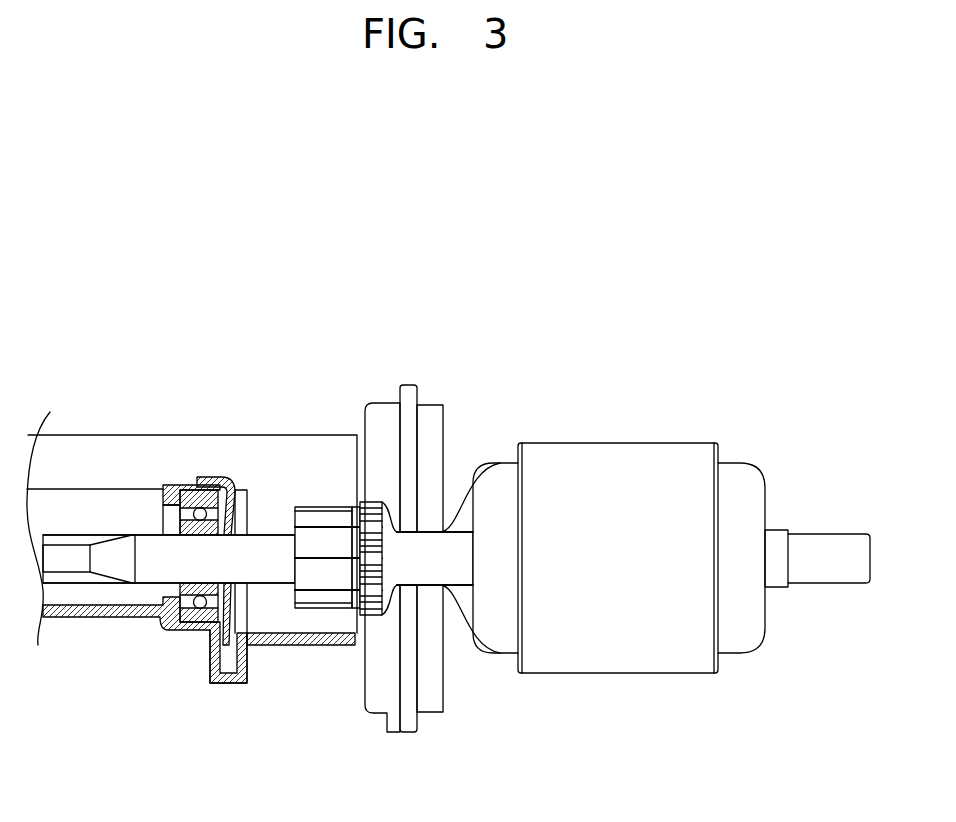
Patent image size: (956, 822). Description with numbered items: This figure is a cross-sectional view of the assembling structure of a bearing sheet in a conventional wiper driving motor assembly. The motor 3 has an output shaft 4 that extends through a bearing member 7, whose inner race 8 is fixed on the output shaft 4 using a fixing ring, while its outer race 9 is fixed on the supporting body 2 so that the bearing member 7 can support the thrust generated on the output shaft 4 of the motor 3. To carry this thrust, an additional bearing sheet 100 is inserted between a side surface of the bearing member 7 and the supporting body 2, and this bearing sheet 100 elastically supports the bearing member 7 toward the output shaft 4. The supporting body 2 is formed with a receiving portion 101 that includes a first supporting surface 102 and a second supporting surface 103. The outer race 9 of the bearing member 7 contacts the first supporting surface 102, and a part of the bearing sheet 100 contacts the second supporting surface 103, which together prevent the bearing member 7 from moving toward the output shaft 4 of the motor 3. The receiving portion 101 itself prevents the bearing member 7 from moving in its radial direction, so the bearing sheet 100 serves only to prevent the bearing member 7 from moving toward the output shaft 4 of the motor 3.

The supporting body 2 is at (302, 640).
The motor 3 is at (639, 427).
The output shaft 4 is at (108, 560).
The bearing member 7 is at (155, 477).
The inner race 8 is at (168, 495).
The outer race 9 is at (180, 528).
The bearing sheet 100 is at (168, 574).
The receiving portion 101 is at (193, 647).
The first supporting surface 102 is at (176, 636).
The second supporting surface 103 is at (224, 675).